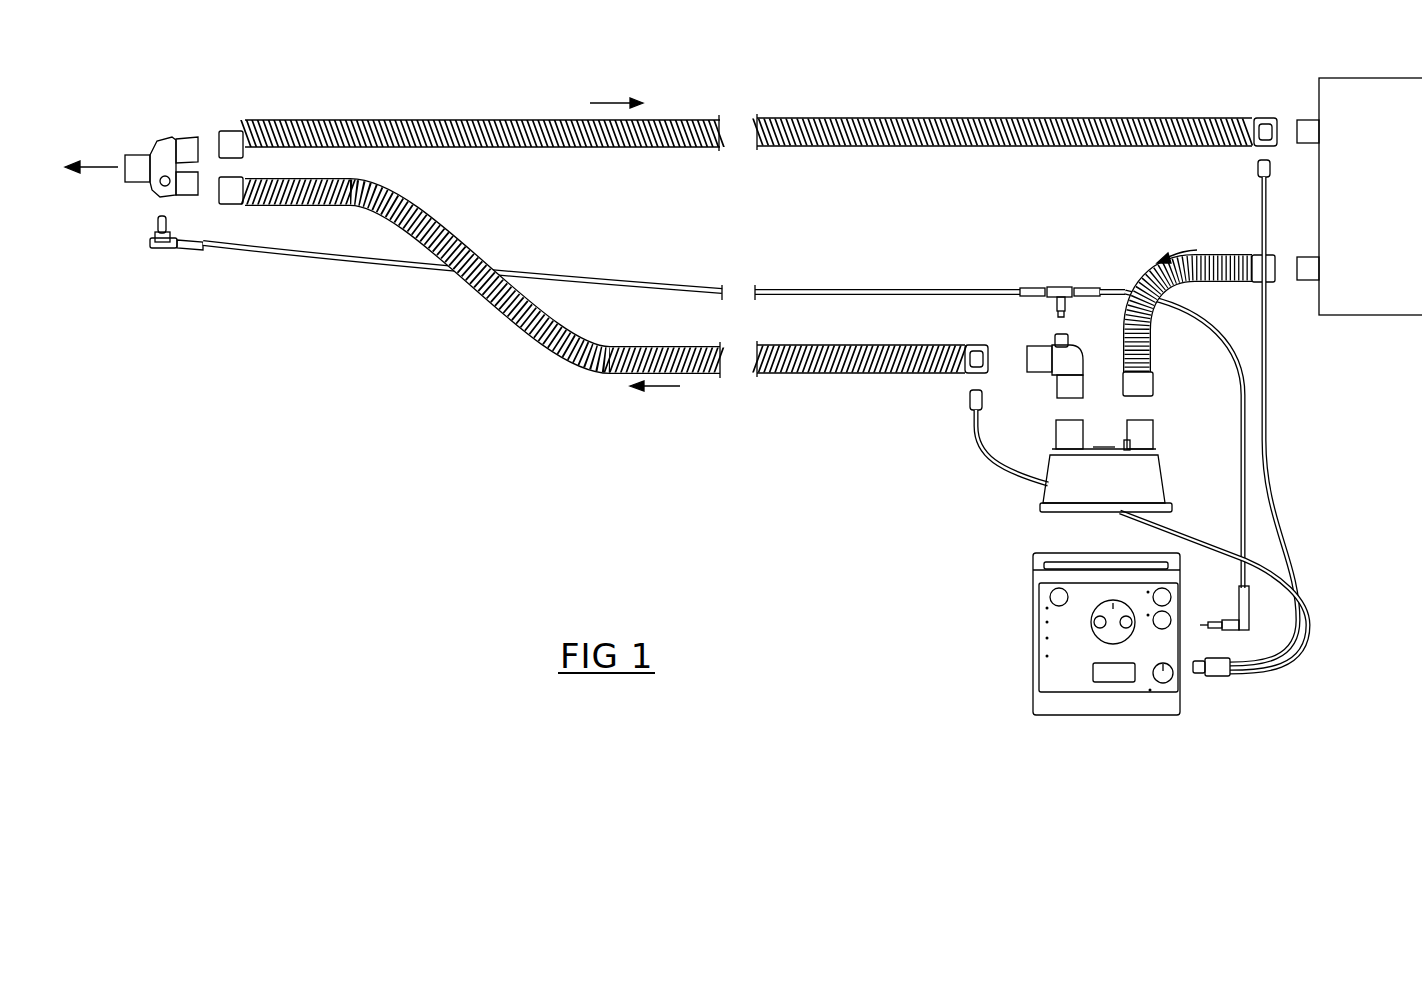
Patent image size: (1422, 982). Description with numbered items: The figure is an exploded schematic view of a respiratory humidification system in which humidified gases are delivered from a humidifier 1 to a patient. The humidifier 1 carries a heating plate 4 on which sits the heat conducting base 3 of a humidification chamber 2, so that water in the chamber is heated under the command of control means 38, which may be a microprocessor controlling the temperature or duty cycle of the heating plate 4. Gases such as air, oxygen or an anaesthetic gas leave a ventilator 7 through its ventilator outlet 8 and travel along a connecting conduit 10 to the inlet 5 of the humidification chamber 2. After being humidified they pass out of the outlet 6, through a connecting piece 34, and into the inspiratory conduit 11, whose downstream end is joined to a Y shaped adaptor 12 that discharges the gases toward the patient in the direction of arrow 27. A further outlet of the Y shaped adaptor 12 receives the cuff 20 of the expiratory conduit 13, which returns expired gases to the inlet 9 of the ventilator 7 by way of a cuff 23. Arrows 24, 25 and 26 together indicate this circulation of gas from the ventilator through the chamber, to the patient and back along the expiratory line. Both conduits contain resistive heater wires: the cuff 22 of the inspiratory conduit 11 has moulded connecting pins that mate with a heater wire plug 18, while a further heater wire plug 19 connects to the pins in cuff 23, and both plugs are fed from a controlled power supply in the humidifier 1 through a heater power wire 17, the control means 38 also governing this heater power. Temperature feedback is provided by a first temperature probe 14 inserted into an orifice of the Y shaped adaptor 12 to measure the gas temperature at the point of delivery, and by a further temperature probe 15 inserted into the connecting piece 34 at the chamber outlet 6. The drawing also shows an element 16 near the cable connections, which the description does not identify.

The humidifier 1 is at (1061, 653).
The humidification chamber 2 is at (1047, 489).
The heat conducting base 3 is at (1073, 513).
The heating plate 4 is at (1098, 553).
The inlet 5 is at (1153, 428).
The outlet 6 is at (1055, 428).
The ventilator 7 is at (1370, 196).
The ventilator outlet 8 is at (1309, 256).
The inlet of ventilator 9 is at (1302, 119).
The connecting conduit 10 is at (1142, 282).
The inspiratory conduit 11 is at (539, 350).
The Y shaped adaptor 12 is at (172, 132).
The expiratory conduit 13 is at (448, 118).
The first temperature probe 14 is at (170, 255).
The further temperature probe 15 is at (1057, 288).
The plug connector 16 is at (1217, 620).
The heater power wire 17 is at (1285, 652).
The heater wire plug 18 is at (968, 405).
The further heater wire plug 19 is at (1257, 168).
The cuff 20 is at (233, 130).
The cuff 22 is at (968, 345).
The cuff 23 is at (1258, 118).
The arrow 24 is at (1177, 245).
The arrow 25 is at (665, 395).
The arrow 26 is at (615, 102).
The arrow 27 is at (86, 158).
The connecting piece 34 is at (1078, 356).
The control means 38 is at (1108, 688).